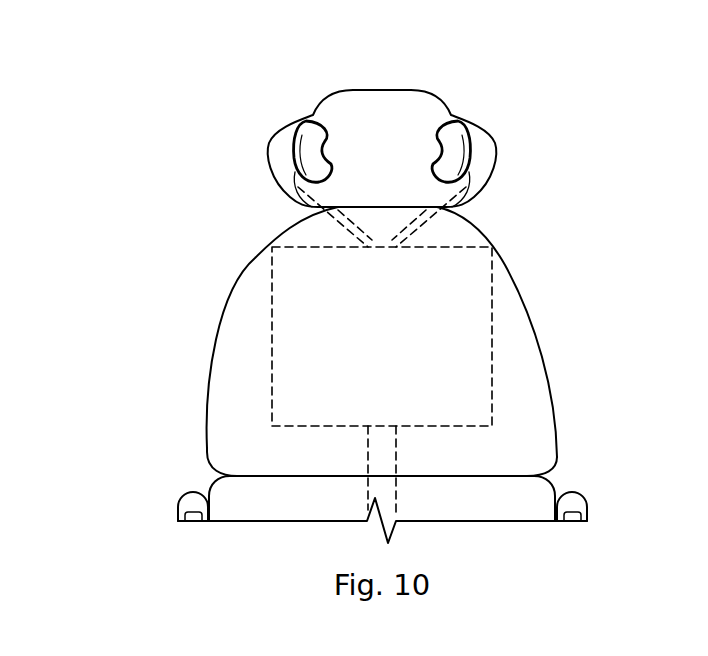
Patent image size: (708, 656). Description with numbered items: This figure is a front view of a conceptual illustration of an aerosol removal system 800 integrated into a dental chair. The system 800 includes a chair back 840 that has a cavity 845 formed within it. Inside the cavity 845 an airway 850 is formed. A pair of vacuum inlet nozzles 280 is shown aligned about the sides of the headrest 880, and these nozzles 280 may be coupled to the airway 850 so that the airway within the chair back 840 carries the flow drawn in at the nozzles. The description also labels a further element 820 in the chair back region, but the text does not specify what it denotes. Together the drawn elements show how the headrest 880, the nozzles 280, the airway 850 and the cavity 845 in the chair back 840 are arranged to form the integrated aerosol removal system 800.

The aerosol removal system 800 is at (138, 67).
The vacuum inlet nozzles 280 is at (287, 120).
The headrest 880 is at (382, 111).
The airway 850 is at (377, 240).
The back panel 820 is at (493, 297).
The cavity 845 is at (470, 360).
The chair back 840 is at (236, 442).